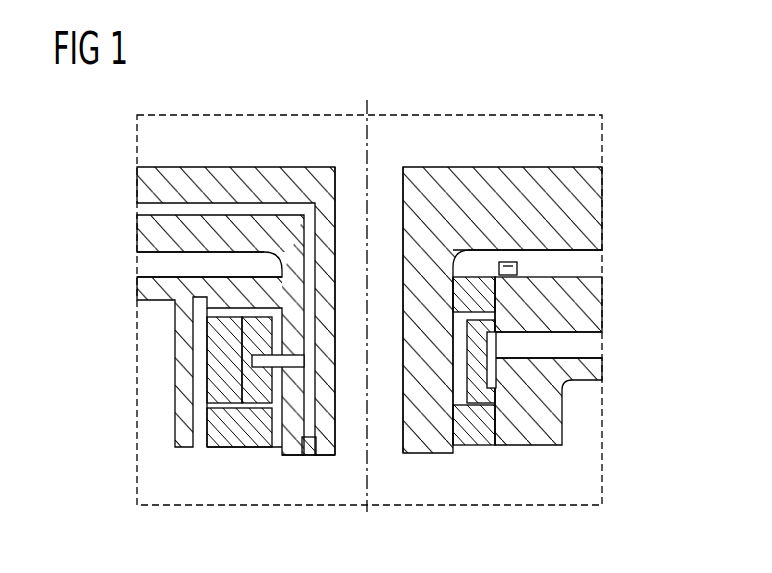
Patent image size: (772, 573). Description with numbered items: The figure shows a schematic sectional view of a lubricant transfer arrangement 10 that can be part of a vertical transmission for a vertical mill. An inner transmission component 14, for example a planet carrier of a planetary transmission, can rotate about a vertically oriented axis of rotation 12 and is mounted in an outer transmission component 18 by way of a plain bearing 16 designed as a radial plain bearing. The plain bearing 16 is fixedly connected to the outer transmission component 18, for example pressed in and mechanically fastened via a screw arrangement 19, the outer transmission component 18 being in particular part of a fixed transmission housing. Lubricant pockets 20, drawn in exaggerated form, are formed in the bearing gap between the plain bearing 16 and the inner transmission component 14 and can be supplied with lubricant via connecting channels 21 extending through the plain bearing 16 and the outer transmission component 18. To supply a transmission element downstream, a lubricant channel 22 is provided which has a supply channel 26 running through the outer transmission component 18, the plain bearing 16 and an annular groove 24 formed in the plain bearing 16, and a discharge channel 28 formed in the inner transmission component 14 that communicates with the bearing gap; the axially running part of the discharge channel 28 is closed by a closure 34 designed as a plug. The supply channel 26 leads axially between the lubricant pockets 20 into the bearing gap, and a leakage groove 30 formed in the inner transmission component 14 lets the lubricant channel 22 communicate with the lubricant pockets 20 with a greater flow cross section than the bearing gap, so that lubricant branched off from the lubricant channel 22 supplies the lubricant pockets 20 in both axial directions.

The lubricant transfer arrangement 10 is at (568, 97).
The axis of rotation 12 is at (377, 160).
The inner transmission component 14 is at (440, 175).
The plain bearing 16 is at (256, 447).
The outer transmission component 18 is at (592, 299).
The screw arrangement 19 is at (508, 262).
The lubricant pockets 20 is at (196, 298).
The connecting channels 21 is at (222, 306).
The lubricant channel 22 is at (590, 347).
The annular groove 24 is at (470, 446).
The supply channel 26 is at (548, 345).
The discharge channel 28 is at (306, 223).
The leakage groove 30 is at (453, 356).
The closure 34 is at (307, 456).